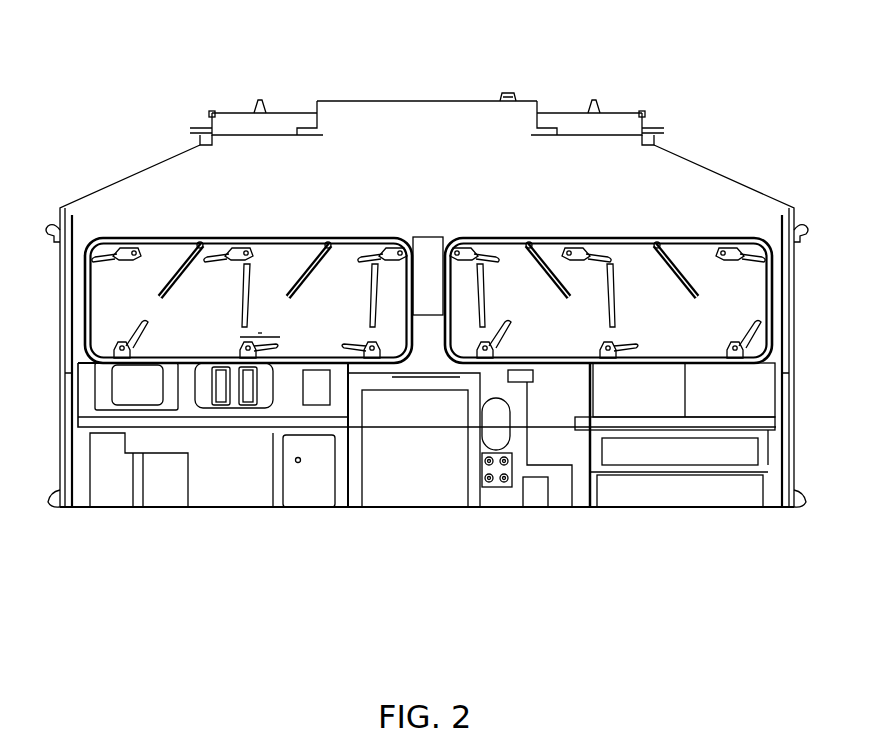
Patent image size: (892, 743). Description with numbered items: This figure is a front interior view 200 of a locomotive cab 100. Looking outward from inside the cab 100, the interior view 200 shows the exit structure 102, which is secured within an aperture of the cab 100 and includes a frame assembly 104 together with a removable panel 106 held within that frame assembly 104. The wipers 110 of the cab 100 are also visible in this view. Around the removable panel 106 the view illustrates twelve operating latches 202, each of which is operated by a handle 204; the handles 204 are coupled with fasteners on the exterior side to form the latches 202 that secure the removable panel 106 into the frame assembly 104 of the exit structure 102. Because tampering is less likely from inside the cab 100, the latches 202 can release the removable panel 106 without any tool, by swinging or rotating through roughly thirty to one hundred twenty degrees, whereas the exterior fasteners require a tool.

The locomotive cab 100 is at (221, 60).
The exit structure 102 is at (237, 225).
The frame assembly 104 is at (97, 246).
The removable panel 106 is at (148, 310).
The wipers 110 is at (213, 264).
The front interior view 200 is at (448, 683).
The operating latches 202 is at (258, 335).
The handles 204 is at (269, 349).